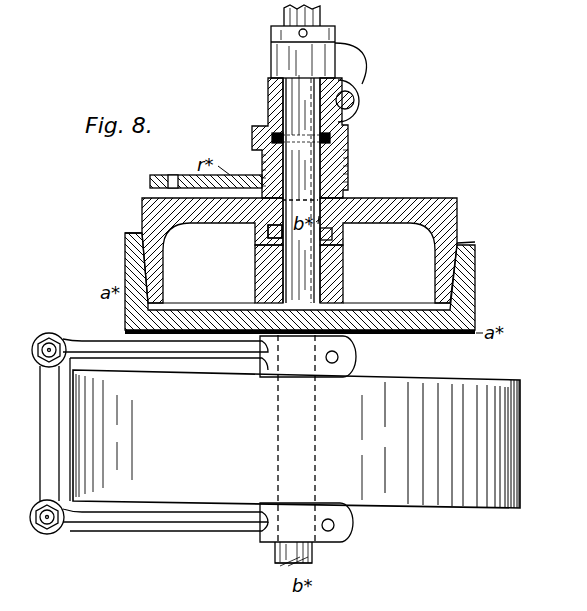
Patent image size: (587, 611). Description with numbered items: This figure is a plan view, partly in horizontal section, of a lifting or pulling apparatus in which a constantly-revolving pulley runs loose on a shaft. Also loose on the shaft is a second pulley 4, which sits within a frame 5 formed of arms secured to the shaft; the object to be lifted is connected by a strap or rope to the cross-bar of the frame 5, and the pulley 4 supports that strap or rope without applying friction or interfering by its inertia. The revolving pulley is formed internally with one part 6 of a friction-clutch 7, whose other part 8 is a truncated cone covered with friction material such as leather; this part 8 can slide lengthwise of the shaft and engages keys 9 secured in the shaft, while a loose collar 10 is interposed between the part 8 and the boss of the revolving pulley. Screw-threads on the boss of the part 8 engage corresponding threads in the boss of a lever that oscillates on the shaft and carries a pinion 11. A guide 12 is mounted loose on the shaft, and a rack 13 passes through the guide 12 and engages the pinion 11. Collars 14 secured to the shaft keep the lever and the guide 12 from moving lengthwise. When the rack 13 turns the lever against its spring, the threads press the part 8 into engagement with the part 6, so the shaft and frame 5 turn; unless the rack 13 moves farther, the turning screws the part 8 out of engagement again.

The second pulley 4 is at (295, 433).
The frame 5 is at (185, 443).
The friction-clutch part 6 is at (140, 232).
The friction-clutch 7 is at (125, 241).
The friction-clutch part 8 is at (299, 242).
The keys 9 is at (266, 230).
The loose collar 10 is at (265, 240).
The pinion 11 is at (266, 103).
The guide 12 is at (271, 62).
The rack 13 is at (352, 97).
The collars 14 is at (337, 35).